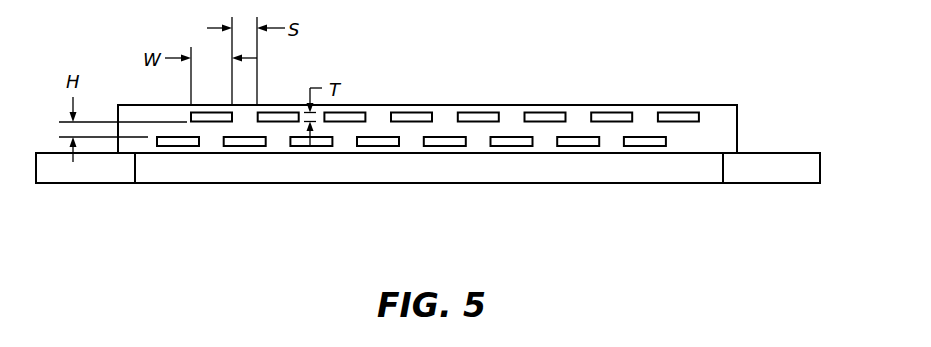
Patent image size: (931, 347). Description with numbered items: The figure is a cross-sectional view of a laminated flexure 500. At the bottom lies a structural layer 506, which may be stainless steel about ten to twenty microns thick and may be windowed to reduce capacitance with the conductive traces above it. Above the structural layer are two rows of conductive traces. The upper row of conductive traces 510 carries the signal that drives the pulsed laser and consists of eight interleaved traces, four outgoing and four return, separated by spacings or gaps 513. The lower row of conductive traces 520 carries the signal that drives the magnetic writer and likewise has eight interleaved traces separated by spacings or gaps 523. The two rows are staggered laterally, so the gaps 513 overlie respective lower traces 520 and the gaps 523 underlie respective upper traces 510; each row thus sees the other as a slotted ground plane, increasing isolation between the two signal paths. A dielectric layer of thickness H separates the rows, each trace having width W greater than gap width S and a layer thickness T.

The laminated flexure 500 is at (293, 204).
The structural layer 506 is at (97, 170).
The upper row of conductive traces 510 is at (708, 128).
The spacings or gaps 513 is at (445, 117).
The lower row of conductive traces 520 is at (675, 130).
The spacings or gaps 523 is at (480, 140).